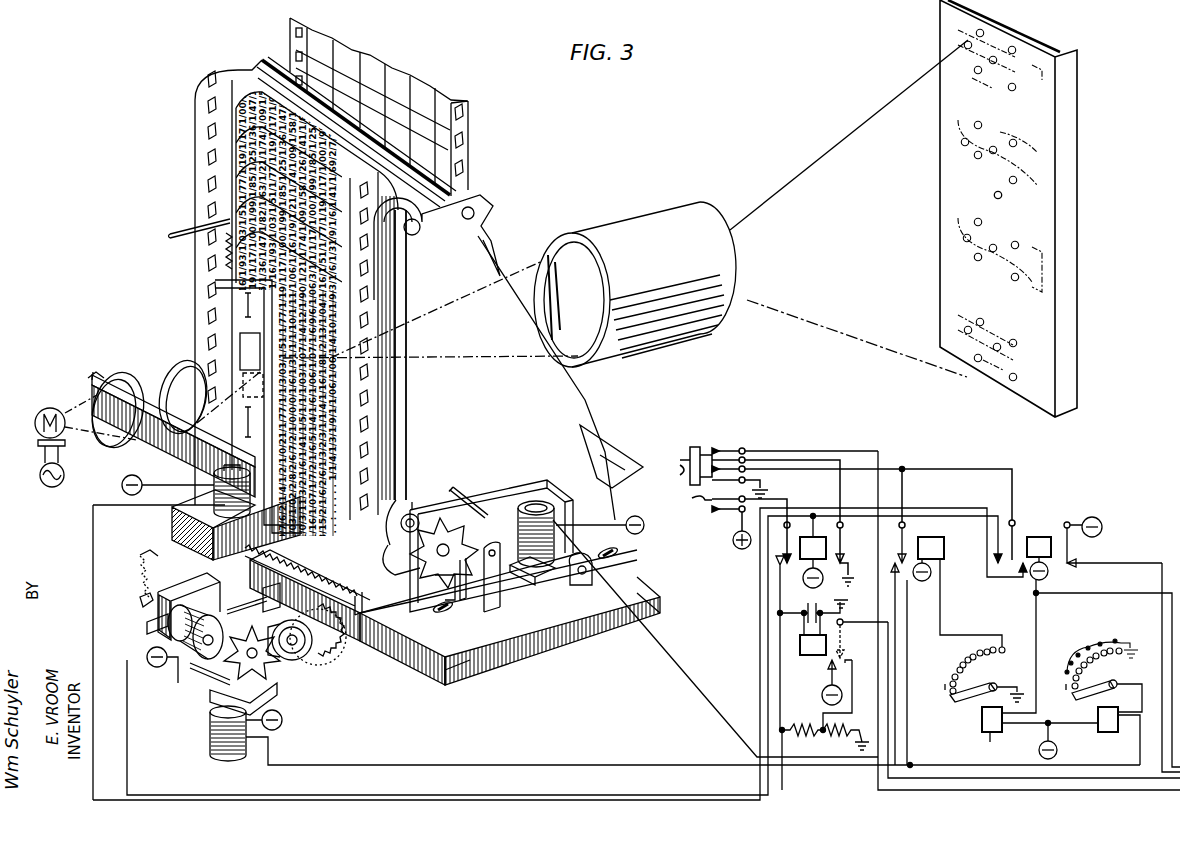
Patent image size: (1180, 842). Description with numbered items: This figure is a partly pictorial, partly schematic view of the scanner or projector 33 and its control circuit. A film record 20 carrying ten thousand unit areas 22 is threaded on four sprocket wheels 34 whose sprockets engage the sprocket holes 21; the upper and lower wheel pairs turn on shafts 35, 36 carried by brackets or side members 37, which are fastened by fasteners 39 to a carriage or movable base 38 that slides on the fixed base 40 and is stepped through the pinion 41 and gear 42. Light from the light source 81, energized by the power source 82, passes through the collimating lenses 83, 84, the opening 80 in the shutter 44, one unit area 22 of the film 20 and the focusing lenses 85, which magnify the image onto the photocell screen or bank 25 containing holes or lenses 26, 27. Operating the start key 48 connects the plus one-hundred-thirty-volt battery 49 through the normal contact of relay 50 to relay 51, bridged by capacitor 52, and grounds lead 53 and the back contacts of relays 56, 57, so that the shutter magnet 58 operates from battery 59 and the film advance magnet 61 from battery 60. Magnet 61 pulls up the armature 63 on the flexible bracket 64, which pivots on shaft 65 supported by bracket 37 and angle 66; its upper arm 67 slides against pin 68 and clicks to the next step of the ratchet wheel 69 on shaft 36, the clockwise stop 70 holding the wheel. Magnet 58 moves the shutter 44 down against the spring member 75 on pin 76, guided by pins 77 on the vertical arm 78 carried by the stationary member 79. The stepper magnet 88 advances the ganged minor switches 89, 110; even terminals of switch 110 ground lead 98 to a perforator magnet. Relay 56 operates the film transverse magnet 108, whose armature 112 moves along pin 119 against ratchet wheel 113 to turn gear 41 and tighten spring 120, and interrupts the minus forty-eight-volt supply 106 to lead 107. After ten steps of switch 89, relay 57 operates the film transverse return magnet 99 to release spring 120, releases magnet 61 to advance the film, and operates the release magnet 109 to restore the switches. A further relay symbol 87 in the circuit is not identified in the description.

The film record 20 is at (195, 170).
The sprocket holes 21 is at (208, 157).
The unit areas 22 is at (240, 82).
The photocell screen 25 is at (1065, 285).
The lenses 26 is at (1013, 47).
The holes or lenses 27 is at (999, 199).
The scanner or projector 33 is at (187, 320).
The sprocket wheels 34 is at (417, 205).
The shaft 35 is at (418, 234).
The shaft 36 is at (414, 512).
The brackets 37 is at (565, 415).
The movable base 38 is at (415, 640).
The fasteners 39 is at (450, 610).
The fixed base 40 is at (460, 668).
The pinion 41 is at (332, 650).
The gear 42 is at (358, 612).
The shutter 44 is at (240, 325).
The start key 48 is at (685, 478).
The plus 130-volt battery 49 is at (742, 549).
The relay 50 is at (826, 548).
The relay 51 is at (810, 656).
The capacitor 52 is at (808, 610).
The lead 53 is at (878, 792).
The relay 56 is at (1040, 537).
The relay 57 is at (944, 548).
The shutter magnet 58 is at (214, 485).
The battery 59 is at (122, 485).
The battery 60 is at (642, 530).
The film advance magnet 61 is at (533, 503).
The armature 63 is at (540, 580).
The flexible bracket 64 is at (573, 505).
The shaft 65 is at (575, 578).
The angle 66 is at (586, 585).
The upper arm 67 is at (503, 490).
The pin 68 is at (458, 500).
The ratchet wheel 69 is at (395, 565).
The clockwise stop 70 is at (442, 578).
The spring member 75 is at (226, 260).
The pin 76 is at (205, 228).
The pins 77 is at (257, 374).
The vertical arm 78 is at (205, 512).
The stationary member 79 is at (213, 540).
The opening 80 is at (240, 355).
The light source 81 is at (50, 408).
The power source 82 is at (54, 487).
The lens 83 is at (118, 410).
The lens 84 is at (173, 426).
The focusing lenses 85 is at (638, 228).
The relay 87 is at (822, 696).
The stepper magnet 88 is at (982, 717).
The minor switch 89 is at (934, 712).
The lead 98 is at (1162, 700).
The film transverse return magnet 99 is at (210, 730).
The minus 48-volt supply 106 is at (1090, 517).
The lead 107 is at (1170, 598).
The film transverse magnet 108 is at (175, 600).
The release magnet 109 is at (1108, 740).
The minor switch 110 is at (1087, 698).
The armature 112 is at (175, 625).
The ratchet wheel 113 is at (268, 668).
The pin 119 is at (250, 600).
The spring 120 is at (300, 660).